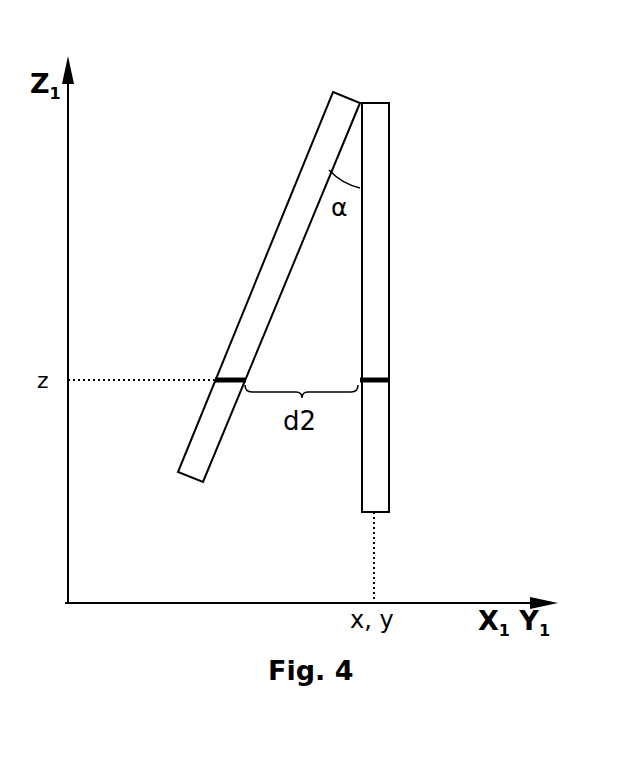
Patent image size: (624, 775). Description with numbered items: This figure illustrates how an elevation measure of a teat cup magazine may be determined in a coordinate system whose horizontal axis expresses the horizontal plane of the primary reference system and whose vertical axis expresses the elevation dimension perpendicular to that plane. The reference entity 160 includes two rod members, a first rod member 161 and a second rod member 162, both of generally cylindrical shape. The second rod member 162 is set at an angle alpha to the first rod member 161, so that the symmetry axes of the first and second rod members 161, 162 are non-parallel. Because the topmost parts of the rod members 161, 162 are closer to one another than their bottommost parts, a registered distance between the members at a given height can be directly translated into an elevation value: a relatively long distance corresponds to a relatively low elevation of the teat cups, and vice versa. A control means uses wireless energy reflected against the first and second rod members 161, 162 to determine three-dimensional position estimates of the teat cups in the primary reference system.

The reference entity 160 is at (328, 265).
The first rod member 161 is at (428, 307).
The second rod member 162 is at (312, 250).